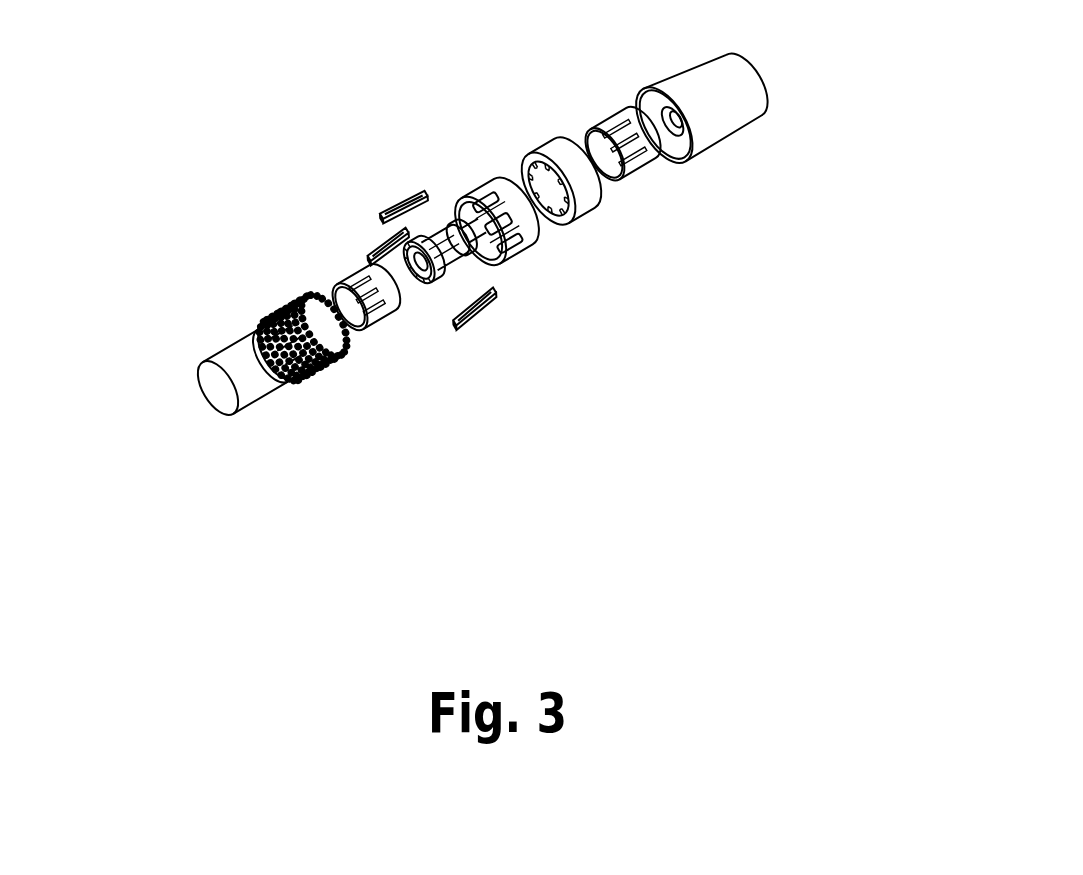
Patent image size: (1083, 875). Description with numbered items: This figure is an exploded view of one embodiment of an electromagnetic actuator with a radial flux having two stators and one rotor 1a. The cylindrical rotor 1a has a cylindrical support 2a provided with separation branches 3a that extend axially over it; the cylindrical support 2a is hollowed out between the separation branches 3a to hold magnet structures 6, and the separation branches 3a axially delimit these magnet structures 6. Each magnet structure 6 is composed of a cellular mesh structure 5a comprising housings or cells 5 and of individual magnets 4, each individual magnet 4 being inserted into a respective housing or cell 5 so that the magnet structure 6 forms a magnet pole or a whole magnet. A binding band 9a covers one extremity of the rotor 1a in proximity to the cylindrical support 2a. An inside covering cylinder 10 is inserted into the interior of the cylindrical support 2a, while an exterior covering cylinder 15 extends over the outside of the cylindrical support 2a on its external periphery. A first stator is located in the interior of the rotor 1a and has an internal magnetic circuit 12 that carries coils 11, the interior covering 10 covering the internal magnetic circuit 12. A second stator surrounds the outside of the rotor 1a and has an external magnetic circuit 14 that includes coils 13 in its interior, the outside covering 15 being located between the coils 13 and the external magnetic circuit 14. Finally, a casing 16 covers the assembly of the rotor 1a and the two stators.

The cylindrical rotor 1a is at (622, 392).
The cylindrical support 2a is at (277, 342).
The separation branches 3a is at (282, 352).
The individual magnets 4 is at (279, 302).
The housings or cells 5 is at (338, 335).
The mesh structure 5a is at (338, 363).
The magnet structure 6 is at (325, 387).
The binding band 9a is at (252, 393).
The inside covering cylinder 10 is at (375, 298).
The coils 11 is at (490, 310).
The internal magnetic circuit 12 is at (423, 233).
The coils 13 is at (530, 243).
The external magnetic circuit 14 is at (583, 188).
The exterior covering cylinder 15 is at (633, 150).
The casing 16 is at (733, 112).